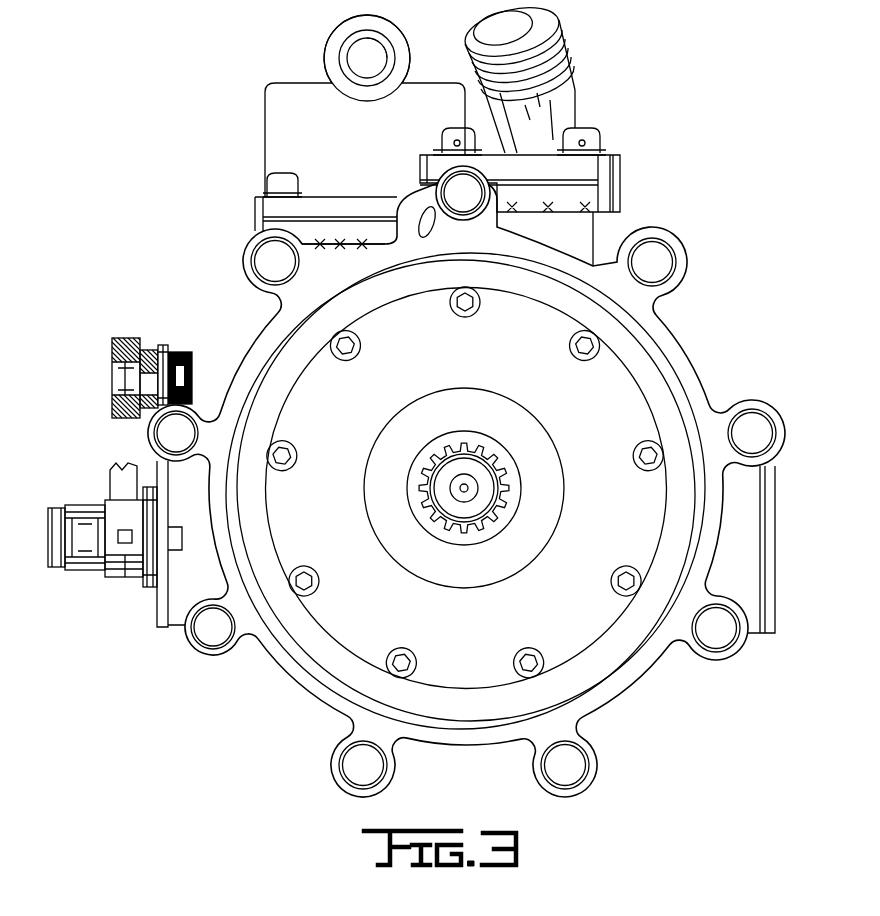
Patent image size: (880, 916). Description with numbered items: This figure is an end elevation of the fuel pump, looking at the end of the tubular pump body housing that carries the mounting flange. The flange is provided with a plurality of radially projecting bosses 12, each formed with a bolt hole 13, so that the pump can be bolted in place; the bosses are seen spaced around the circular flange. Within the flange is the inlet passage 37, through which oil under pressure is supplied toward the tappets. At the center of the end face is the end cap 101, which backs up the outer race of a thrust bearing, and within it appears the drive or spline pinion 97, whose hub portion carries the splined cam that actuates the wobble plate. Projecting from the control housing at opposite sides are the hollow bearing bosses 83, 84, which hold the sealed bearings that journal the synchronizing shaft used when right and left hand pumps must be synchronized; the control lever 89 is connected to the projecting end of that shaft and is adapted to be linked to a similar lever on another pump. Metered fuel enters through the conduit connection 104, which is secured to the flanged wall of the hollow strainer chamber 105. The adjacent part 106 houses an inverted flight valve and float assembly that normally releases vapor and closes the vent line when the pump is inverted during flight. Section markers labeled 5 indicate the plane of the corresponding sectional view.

The radially projecting bosses 12 is at (640, 298).
The bolt holes 13 is at (652, 262).
The inlet passage 37 is at (432, 229).
The section line 5- 5 is at (393, 147).
The hollow bearing boss 83 is at (178, 600).
The hollow bearing boss 84 is at (750, 600).
The control lever 89 is at (122, 475).
The drive or spline pinion 97 is at (504, 479).
The end cap 101 is at (492, 621).
The conduit connection 104 is at (575, 82).
The hollow strainer chamber 105 is at (568, 235).
The inverted flight valve and float assembly housing 106 is at (288, 134).